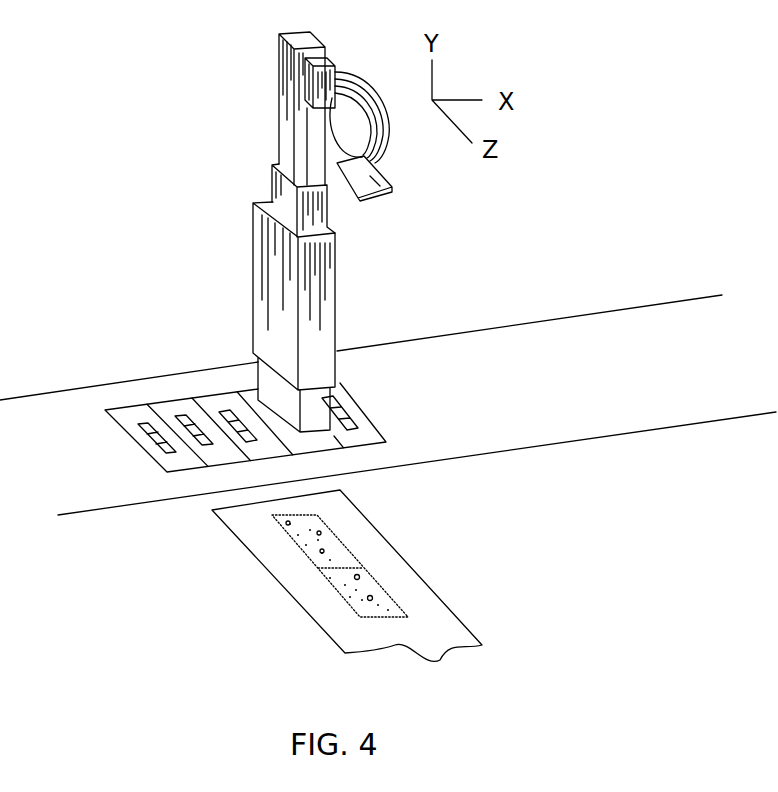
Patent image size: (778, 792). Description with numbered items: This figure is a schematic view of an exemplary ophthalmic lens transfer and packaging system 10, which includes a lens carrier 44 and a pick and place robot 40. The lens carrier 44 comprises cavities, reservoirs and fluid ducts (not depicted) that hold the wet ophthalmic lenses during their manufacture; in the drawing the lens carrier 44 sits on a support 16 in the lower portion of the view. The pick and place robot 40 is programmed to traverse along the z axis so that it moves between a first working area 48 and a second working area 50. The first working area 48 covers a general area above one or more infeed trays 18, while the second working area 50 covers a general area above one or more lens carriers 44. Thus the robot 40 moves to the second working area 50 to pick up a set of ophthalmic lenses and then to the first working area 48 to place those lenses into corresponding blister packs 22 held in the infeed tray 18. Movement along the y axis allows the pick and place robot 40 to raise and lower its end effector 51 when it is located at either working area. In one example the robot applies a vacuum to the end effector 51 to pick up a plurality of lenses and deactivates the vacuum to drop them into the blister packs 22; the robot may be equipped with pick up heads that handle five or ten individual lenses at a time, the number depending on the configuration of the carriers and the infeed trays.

The system 10 is at (423, 233).
The slide 16 is at (314, 623).
The infeed tray 18 is at (177, 415).
The blister pack 22 is at (153, 447).
The pick and place robot 40 is at (207, 213).
The lens carrier 44 is at (328, 552).
The first working area 48 is at (362, 325).
The second working area 50 is at (238, 587).
The end effector 51 is at (270, 382).